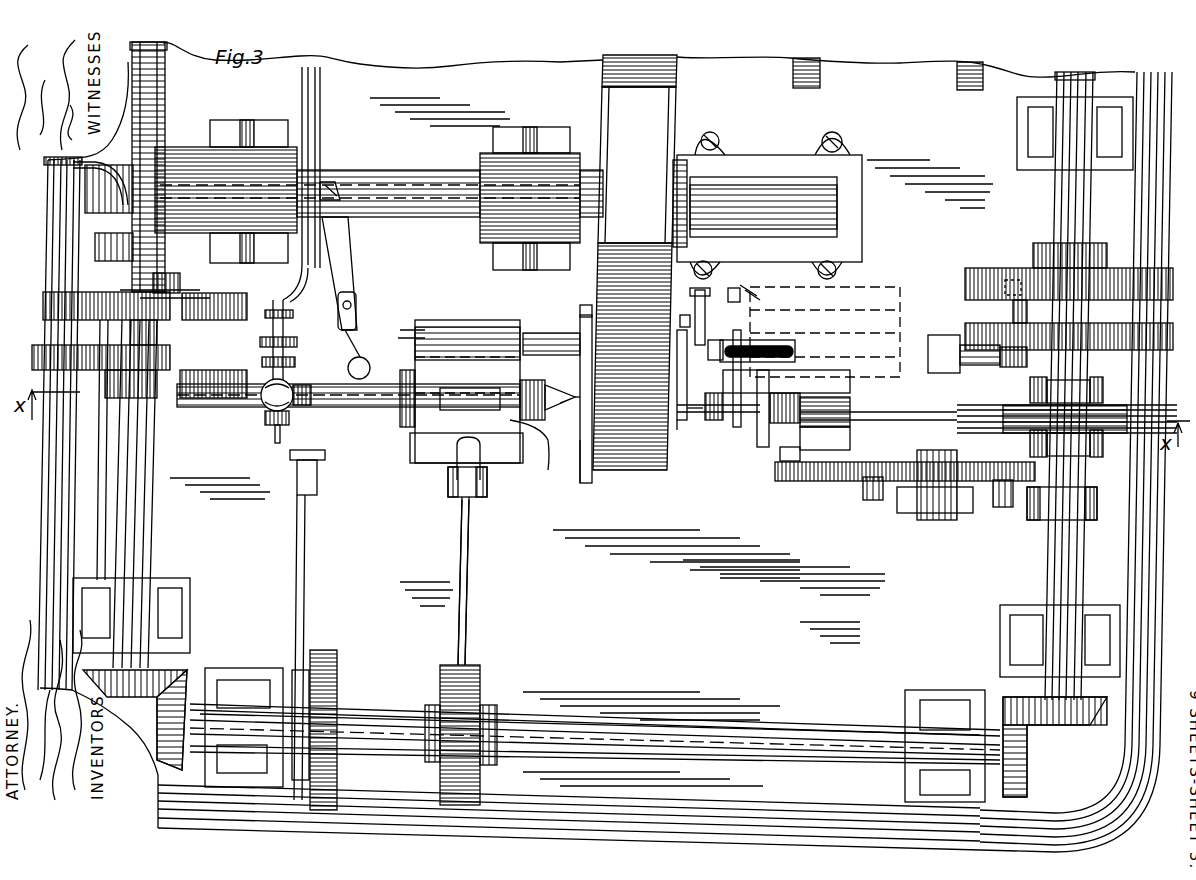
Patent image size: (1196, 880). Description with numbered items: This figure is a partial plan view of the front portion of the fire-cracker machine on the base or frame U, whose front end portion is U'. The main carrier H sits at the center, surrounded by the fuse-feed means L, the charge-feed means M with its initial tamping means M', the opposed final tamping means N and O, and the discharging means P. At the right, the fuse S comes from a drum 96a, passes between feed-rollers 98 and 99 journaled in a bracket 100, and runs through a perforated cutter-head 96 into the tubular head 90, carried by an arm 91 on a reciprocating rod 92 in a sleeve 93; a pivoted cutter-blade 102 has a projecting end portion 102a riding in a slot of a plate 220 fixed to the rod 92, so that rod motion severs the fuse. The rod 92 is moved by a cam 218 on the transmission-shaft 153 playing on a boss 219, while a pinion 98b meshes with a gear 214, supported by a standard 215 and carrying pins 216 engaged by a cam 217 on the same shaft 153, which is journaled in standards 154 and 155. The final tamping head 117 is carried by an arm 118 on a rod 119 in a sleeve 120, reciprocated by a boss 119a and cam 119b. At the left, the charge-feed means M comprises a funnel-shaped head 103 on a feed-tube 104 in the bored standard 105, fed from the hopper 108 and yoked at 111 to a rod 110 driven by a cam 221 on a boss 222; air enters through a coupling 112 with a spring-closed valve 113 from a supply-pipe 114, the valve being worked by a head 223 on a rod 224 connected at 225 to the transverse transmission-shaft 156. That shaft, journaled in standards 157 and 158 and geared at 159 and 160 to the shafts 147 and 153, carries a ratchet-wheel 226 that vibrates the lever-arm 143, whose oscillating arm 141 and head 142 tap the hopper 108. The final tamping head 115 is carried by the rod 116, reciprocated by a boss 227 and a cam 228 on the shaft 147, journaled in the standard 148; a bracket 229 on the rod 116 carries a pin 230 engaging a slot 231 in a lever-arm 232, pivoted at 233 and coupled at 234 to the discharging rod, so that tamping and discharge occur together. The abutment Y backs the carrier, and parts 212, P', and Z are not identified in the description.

The vertical gear shaft 212 is at (172, 106).
The discharging means P is at (379, 195).
The spindle housing P' is at (769, 205).
The pin-and-slot engagement 234 is at (332, 185).
The main carrier H is at (572, 360).
The horizontal lever-arm 232 is at (330, 255).
The supply-pipe 114 is at (288, 300).
The elongated slot 231 is at (355, 262).
The depending pin 230 is at (352, 298).
The pivot 233 is at (370, 368).
The bracket 229 is at (400, 332).
The cam 228 is at (170, 300).
The boss 227 is at (245, 300).
The cam 221 is at (93, 372).
The boss 222 is at (218, 386).
The longitudinal transmission-shaft 147 is at (157, 477).
The standard 148 is at (175, 592).
The gearing 159 is at (185, 676).
The standard 157 is at (238, 690).
The transverse transmission-shaft 156 is at (725, 740).
The base or frame U is at (590, 679).
The front end portion U' is at (569, 806).
The connection 225 is at (340, 680).
The reciprocating rod 224 is at (308, 570).
The reciprocating head 223 is at (318, 458).
The ratchet-wheel 226 is at (478, 664).
The lever-arm 143 is at (470, 632).
The oscillating arm 141 is at (487, 484).
The head 142 is at (456, 485).
The reciprocating rod 116 is at (470, 330).
The bored standard 105 is at (480, 340).
The feed-tube 104 is at (350, 408).
The reciprocating rod 110 is at (262, 403).
The yoke 111 is at (303, 385).
The tubular coupling 112 is at (270, 427).
The spring-closed valve 113 is at (282, 438).
The final tamping means N is at (551, 332).
The charge-feed means M is at (538, 389).
The funnel-shaped tubular reciprocating head 103 is at (565, 410).
The initial tamping means M' is at (530, 445).
The powder reservoir or hopper 108 is at (583, 483).
The plate Z is at (580, 445).
The cylindrical elongated head 115 is at (584, 310).
The cylindrical elongated head 117 is at (705, 312).
The final tamping means O is at (683, 312).
The fuse-feed means L is at (816, 375).
The arm 91 is at (718, 390).
The tubular reciprocating head 90 is at (700, 414).
The abutment Y is at (677, 437).
The perforated cutter-head 96 is at (722, 422).
The bracket 100 is at (760, 440).
The feed-roller 98 is at (790, 430).
The pinion 98b is at (809, 477).
The feed-roller 99 is at (850, 420).
The pivoted cutter-blade 102 is at (786, 381).
The projecting end portion 102a is at (760, 345).
The plate 220 is at (800, 348).
The sleeve 120 is at (845, 300).
The arm 118 is at (731, 282).
The reciprocating rod 119 is at (765, 281).
The sleeve 93 is at (900, 352).
The reciprocating rod 92 is at (928, 368).
The boss 219 is at (1003, 352).
The cam 218 is at (1090, 325).
The fuse S is at (910, 416).
The drum 96a is at (1103, 380).
The gear 214 is at (972, 465).
The standard 215 is at (935, 515).
The laterally-projecting pins 216 is at (935, 488).
The cam 217 is at (1075, 495).
The standard 154 is at (1030, 147).
The longitudinal transmission-shaft 153 is at (1088, 200).
The boss 119a is at (1008, 262).
The cam 119b is at (1058, 282).
The standard 155 is at (1015, 618).
The standard 158 is at (940, 708).
The gearing 160 is at (1030, 745).